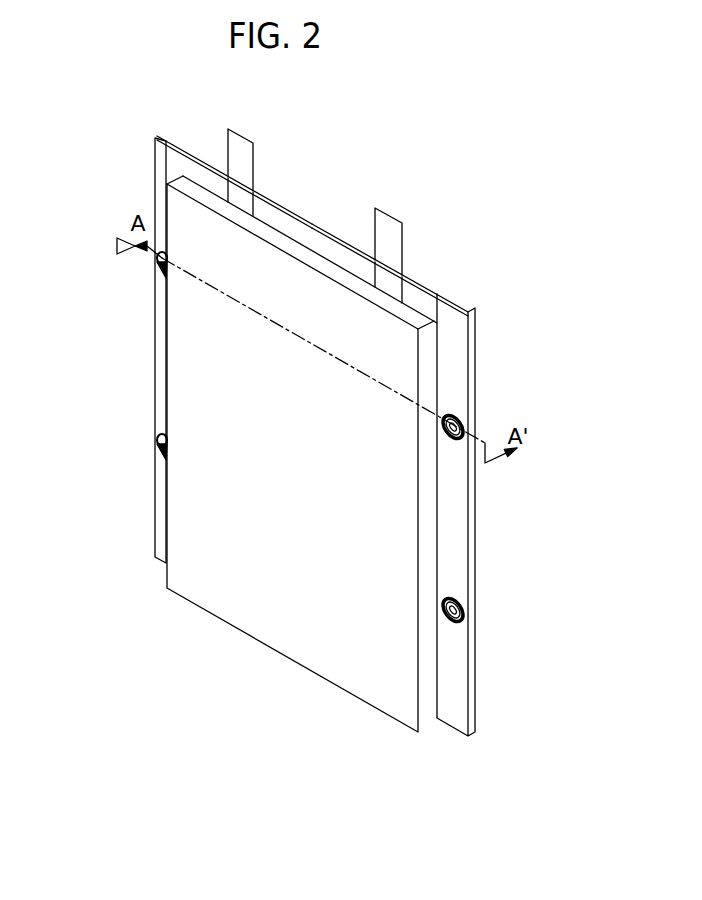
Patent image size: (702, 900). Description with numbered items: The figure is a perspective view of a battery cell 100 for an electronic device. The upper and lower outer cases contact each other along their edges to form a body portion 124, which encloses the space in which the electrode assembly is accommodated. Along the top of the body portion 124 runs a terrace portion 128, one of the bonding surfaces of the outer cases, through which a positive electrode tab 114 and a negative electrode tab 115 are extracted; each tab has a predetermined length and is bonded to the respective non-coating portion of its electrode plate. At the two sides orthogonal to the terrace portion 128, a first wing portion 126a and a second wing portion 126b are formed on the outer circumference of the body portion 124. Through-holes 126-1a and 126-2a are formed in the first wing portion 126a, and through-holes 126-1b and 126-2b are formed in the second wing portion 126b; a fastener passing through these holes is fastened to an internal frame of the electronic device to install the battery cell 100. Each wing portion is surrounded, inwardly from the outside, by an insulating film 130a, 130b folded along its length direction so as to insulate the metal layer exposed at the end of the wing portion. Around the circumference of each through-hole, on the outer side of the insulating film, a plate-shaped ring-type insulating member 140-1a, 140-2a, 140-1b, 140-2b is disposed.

The battery cell 100 is at (496, 102).
The positive electrode tab 114 is at (242, 142).
The negative electrode tab 115 is at (384, 220).
The body portion 124 is at (290, 246).
The first wing portion 126a is at (460, 304).
The second wing portion 126b is at (168, 141).
The through-hole 126-1a is at (460, 421).
The through-hole 126-1b is at (158, 264).
The through-hole 126-2a is at (462, 610).
The through-hole 126-2b is at (157, 447).
The terrace portion 128 is at (422, 295).
The insulating film 130a is at (460, 353).
The insulating film 130b is at (162, 180).
The plate-shaped ring-type insulating member 140-1a is at (458, 441).
The plate-shaped ring-type insulating member 140-1b is at (162, 274).
The plate-shaped ring-type insulating member 140-2a is at (458, 627).
The plate-shaped ring-type insulating member 140-2b is at (162, 458).